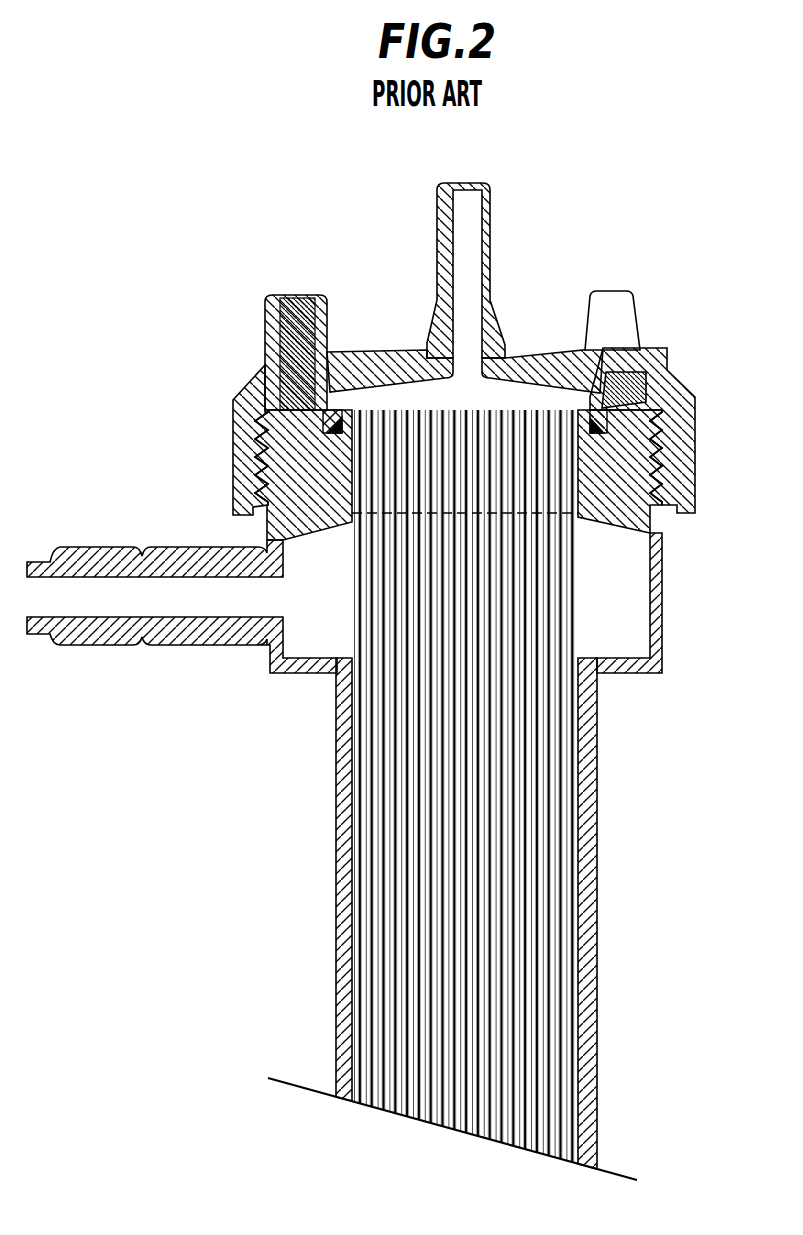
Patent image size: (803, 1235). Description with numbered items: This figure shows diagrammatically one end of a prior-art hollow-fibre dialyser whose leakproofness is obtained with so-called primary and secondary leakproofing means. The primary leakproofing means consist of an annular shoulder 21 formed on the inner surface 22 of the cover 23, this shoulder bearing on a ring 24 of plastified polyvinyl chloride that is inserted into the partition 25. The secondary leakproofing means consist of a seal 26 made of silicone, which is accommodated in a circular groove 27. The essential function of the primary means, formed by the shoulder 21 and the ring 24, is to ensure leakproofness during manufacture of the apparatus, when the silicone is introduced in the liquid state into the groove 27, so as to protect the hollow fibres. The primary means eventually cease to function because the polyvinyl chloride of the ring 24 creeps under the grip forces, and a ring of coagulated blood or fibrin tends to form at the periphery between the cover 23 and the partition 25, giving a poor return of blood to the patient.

The annular shoulder 21 is at (305, 385).
The inner surface 22 is at (389, 368).
The cover 23 is at (500, 313).
The ring 24 is at (655, 372).
The partition 25 is at (678, 510).
The seal 26 is at (295, 298).
The circular groove 27 is at (268, 318).